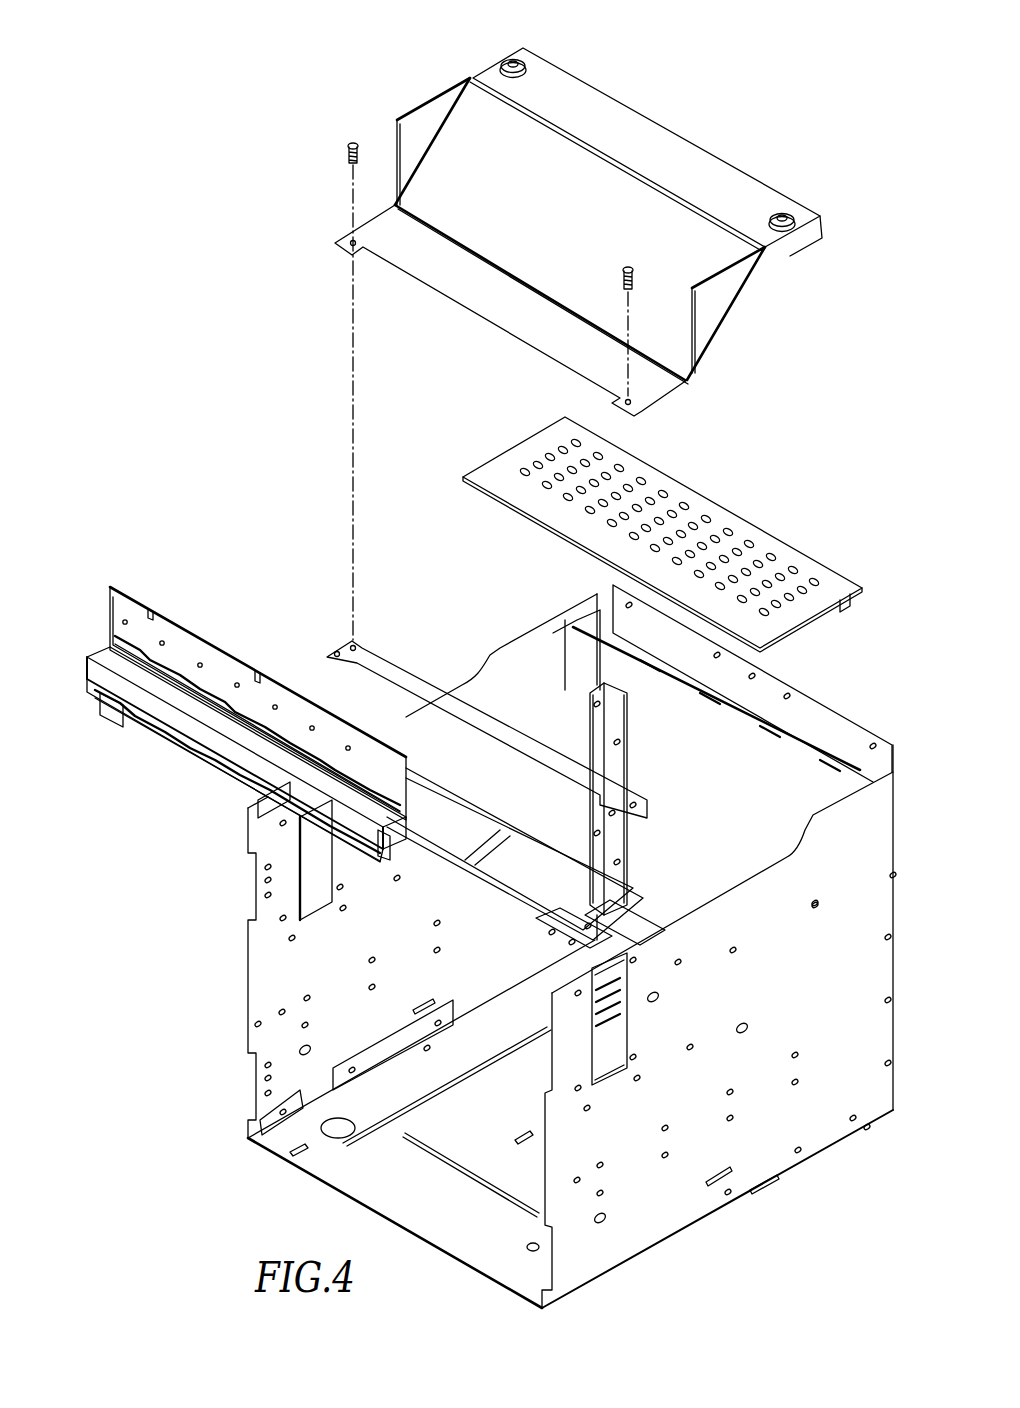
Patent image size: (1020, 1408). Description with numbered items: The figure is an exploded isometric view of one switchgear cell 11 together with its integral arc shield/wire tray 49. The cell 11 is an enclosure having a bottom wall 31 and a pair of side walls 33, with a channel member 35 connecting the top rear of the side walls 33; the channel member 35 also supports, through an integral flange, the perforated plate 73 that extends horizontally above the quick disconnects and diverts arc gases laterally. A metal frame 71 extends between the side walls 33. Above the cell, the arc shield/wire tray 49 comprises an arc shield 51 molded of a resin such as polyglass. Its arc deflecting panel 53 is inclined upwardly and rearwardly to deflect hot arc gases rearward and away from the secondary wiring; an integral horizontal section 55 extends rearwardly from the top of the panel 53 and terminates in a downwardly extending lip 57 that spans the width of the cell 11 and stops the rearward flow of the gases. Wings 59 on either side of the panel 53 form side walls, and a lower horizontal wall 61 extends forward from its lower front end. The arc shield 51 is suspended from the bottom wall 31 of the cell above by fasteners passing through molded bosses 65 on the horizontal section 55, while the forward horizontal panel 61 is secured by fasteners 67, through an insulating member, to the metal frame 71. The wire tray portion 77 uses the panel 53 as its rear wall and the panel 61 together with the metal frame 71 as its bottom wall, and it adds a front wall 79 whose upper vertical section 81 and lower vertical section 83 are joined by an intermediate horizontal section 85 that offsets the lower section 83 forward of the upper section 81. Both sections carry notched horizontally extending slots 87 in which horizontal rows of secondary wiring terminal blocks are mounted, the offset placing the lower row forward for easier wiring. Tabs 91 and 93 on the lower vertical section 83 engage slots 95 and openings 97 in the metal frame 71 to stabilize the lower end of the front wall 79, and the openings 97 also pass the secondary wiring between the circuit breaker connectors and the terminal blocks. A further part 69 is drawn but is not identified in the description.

The cell 11 is at (237, 937).
The bottom wall 31 is at (355, 1185).
The side walls 33 is at (262, 978).
The channel member 35 is at (845, 740).
The arc shield/wire tray 49 is at (594, 324).
The arc shield 51 is at (758, 167).
The arc deflecting panel 53 is at (598, 190).
The horizontal section 55 is at (703, 155).
The downwardly extending lip 57 is at (822, 232).
The wings 59 is at (412, 125).
The lower horizontal wall 61 is at (655, 385).
The molded bosses 65 is at (520, 62).
The fasteners 67 is at (350, 150).
The mounting strap 69 is at (400, 650).
The metal frame 71 is at (493, 870).
The perforated plate 73 is at (500, 465).
The wire tray portion 77 is at (160, 582).
The front wall 79 is at (118, 590).
The upper vertical section 81 is at (105, 615).
The lower vertical section 83 is at (92, 688).
The intermediate horizontal section 85 is at (108, 655).
The notched horizontally extending slots 87 is at (190, 665).
The tabs 91 is at (108, 700).
The tabs 93 is at (255, 805).
The slots 95 is at (633, 897).
The openings 97 is at (542, 873).